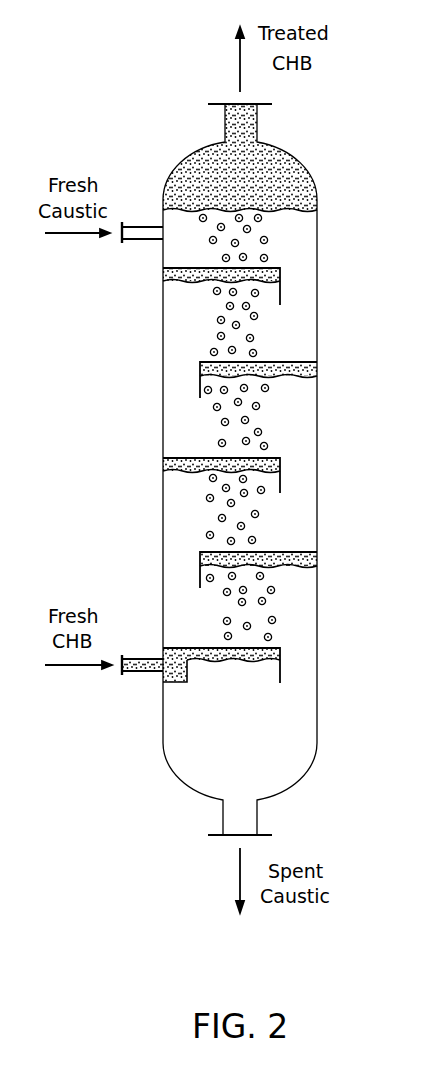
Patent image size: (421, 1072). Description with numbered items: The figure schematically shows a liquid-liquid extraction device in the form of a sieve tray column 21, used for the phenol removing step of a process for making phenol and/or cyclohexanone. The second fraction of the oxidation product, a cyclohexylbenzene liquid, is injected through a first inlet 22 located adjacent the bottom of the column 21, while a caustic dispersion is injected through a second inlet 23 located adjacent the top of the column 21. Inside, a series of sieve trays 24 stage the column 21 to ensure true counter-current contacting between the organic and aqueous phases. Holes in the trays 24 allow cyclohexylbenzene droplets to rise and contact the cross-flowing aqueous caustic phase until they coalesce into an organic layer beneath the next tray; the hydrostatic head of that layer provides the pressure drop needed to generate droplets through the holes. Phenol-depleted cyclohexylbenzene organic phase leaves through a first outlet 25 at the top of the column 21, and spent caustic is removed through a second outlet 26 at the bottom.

The sieve tray column 21 is at (163, 490).
The first inlet 22 is at (142, 672).
The second inlet 23 is at (143, 240).
The sieve trays 24 is at (282, 362).
The first outlet 25 is at (230, 104).
The second outlet 26 is at (222, 810).